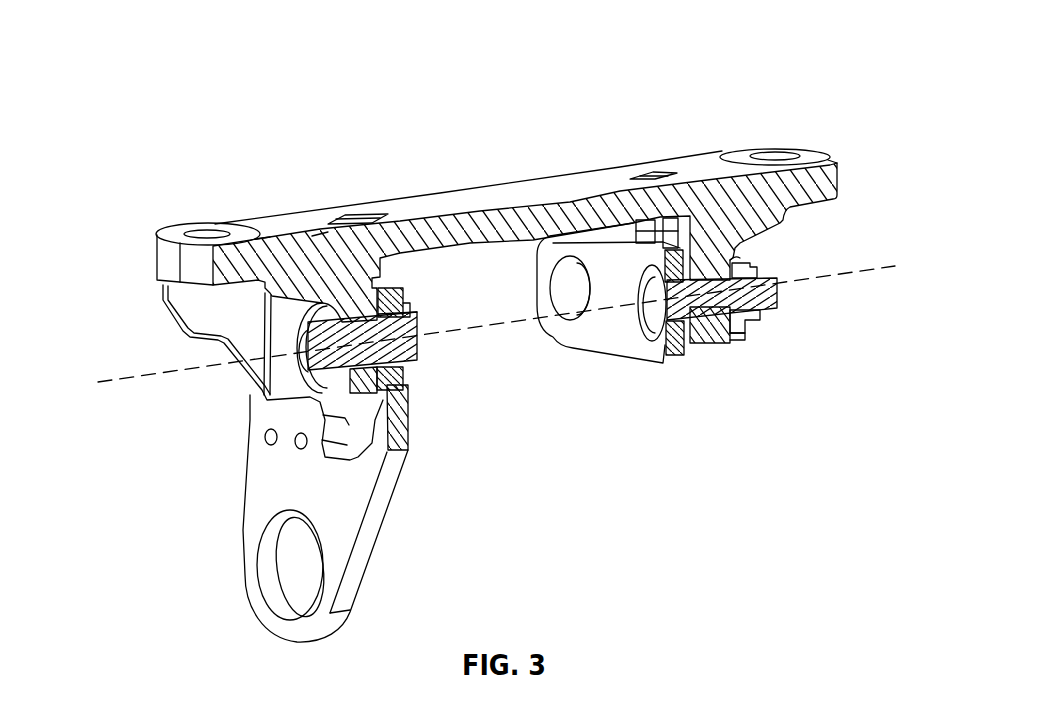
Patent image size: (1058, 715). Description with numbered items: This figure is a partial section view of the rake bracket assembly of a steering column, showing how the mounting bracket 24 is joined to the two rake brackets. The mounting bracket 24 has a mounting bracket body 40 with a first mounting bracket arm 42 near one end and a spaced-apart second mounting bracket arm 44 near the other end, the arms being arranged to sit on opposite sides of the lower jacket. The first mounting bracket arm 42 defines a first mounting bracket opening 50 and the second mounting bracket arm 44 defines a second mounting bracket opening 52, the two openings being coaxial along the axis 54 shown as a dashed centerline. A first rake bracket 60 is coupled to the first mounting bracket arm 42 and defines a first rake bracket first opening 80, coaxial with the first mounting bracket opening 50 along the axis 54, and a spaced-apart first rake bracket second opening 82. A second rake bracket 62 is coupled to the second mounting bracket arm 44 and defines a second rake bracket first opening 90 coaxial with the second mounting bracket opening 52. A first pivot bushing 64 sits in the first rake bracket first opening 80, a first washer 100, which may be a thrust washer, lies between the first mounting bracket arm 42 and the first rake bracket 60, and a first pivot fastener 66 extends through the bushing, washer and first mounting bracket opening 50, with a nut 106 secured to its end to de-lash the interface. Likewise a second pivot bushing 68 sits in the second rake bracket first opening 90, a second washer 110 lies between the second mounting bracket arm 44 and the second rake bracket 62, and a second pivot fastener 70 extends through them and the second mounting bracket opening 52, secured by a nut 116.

The mounting bracket 24 is at (741, 38).
The mounting bracket body 40 is at (487, 197).
The first mounting bracket arm 42 is at (712, 342).
The second mounting bracket arm 44 is at (408, 420).
The first mounting bracket opening 50 is at (733, 343).
The second mounting bracket opening 52 is at (403, 388).
The axis 54 is at (150, 373).
The first rake bracket 60 is at (603, 356).
The second rake bracket 62 is at (390, 571).
The first pivot bushing 64 is at (670, 348).
The first pivot fastener 66 is at (784, 278).
The second pivot bushing 68 is at (415, 306).
The second pivot fastener 70 is at (250, 397).
The first rake bracket first opening 80 is at (680, 250).
The first rake bracket second opening 82 is at (563, 283).
The second rake bracket first opening 90 is at (398, 288).
The first washer 100 is at (742, 332).
The nut 106 is at (760, 320).
The second washer 110 is at (320, 233).
The nut 116 is at (265, 238).